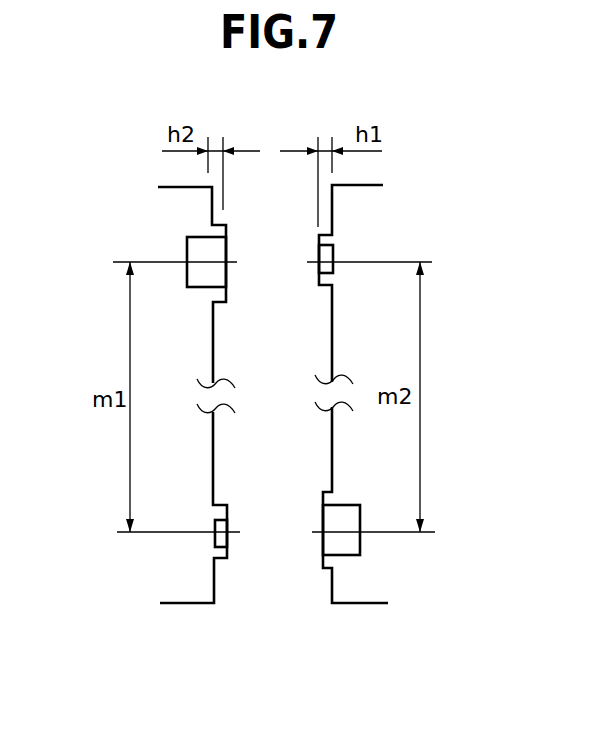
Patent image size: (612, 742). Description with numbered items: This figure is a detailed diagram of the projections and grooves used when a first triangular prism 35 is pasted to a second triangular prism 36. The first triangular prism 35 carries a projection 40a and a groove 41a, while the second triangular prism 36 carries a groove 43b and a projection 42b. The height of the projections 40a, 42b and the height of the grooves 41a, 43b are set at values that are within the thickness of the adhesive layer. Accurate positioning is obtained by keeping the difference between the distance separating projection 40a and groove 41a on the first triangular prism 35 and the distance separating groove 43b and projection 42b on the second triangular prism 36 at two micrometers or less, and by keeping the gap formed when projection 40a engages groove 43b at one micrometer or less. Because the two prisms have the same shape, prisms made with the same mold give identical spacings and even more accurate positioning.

The first triangular prism 35 is at (192, 595).
The second triangular prism 36 is at (363, 593).
The projection 40a is at (217, 550).
The groove 41a is at (197, 252).
The projection 42b is at (330, 240).
The groove 43b is at (353, 545).